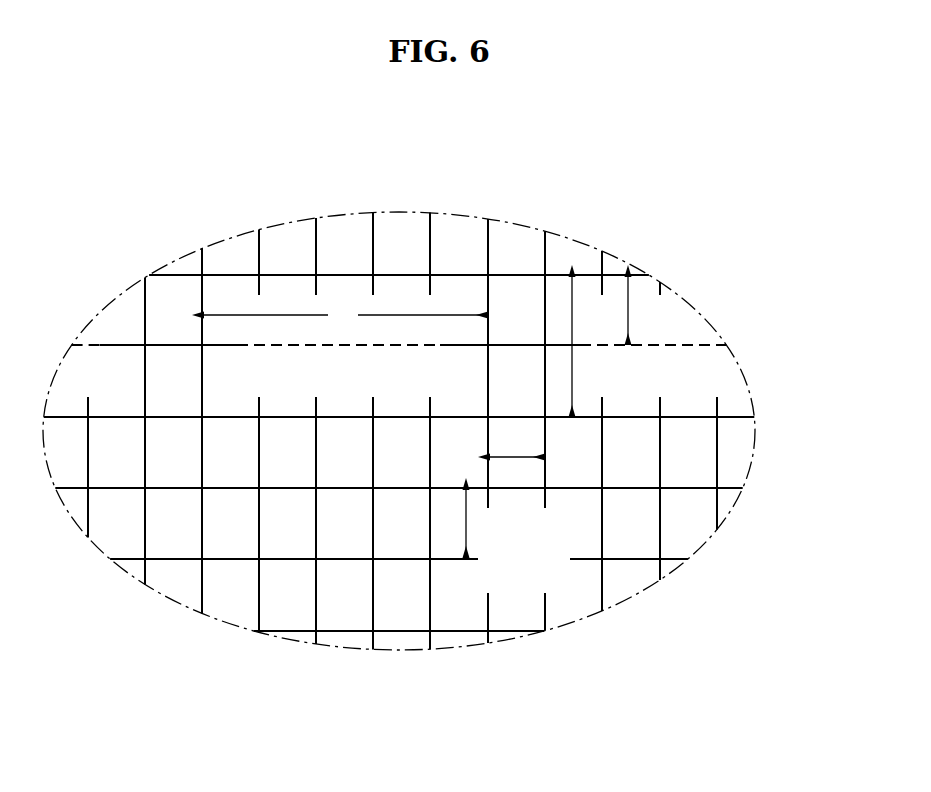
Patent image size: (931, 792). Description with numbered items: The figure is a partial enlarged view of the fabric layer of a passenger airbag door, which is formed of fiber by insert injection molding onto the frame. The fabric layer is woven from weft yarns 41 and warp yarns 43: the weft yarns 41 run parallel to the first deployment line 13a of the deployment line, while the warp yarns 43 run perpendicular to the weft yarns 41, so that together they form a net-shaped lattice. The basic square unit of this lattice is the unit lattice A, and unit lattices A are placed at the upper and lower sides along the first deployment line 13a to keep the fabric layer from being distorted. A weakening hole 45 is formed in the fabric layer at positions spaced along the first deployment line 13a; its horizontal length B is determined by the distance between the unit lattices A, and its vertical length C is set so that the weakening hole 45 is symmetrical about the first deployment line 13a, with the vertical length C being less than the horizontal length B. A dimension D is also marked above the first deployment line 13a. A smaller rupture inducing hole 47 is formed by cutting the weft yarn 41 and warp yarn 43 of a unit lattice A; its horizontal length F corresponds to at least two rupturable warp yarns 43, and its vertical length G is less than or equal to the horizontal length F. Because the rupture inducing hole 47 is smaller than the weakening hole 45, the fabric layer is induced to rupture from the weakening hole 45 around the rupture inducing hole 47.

The first deployment line 13a is at (683, 345).
The weft yarn 41 is at (350, 273).
The warp yarn 43 is at (432, 245).
The weakening hole 45 is at (312, 385).
The rupture inducing hole 47 is at (532, 550).
The unit lattice A is at (145, 315).
The horizontal length of the weakening hole B is at (345, 315).
The vertical length of the weakening hole C is at (583, 346).
The height dimension D is at (639, 310).
The horizontal length of the rupture inducing hole F is at (516, 444).
The vertical length of the rupture inducing hole G is at (454, 523).